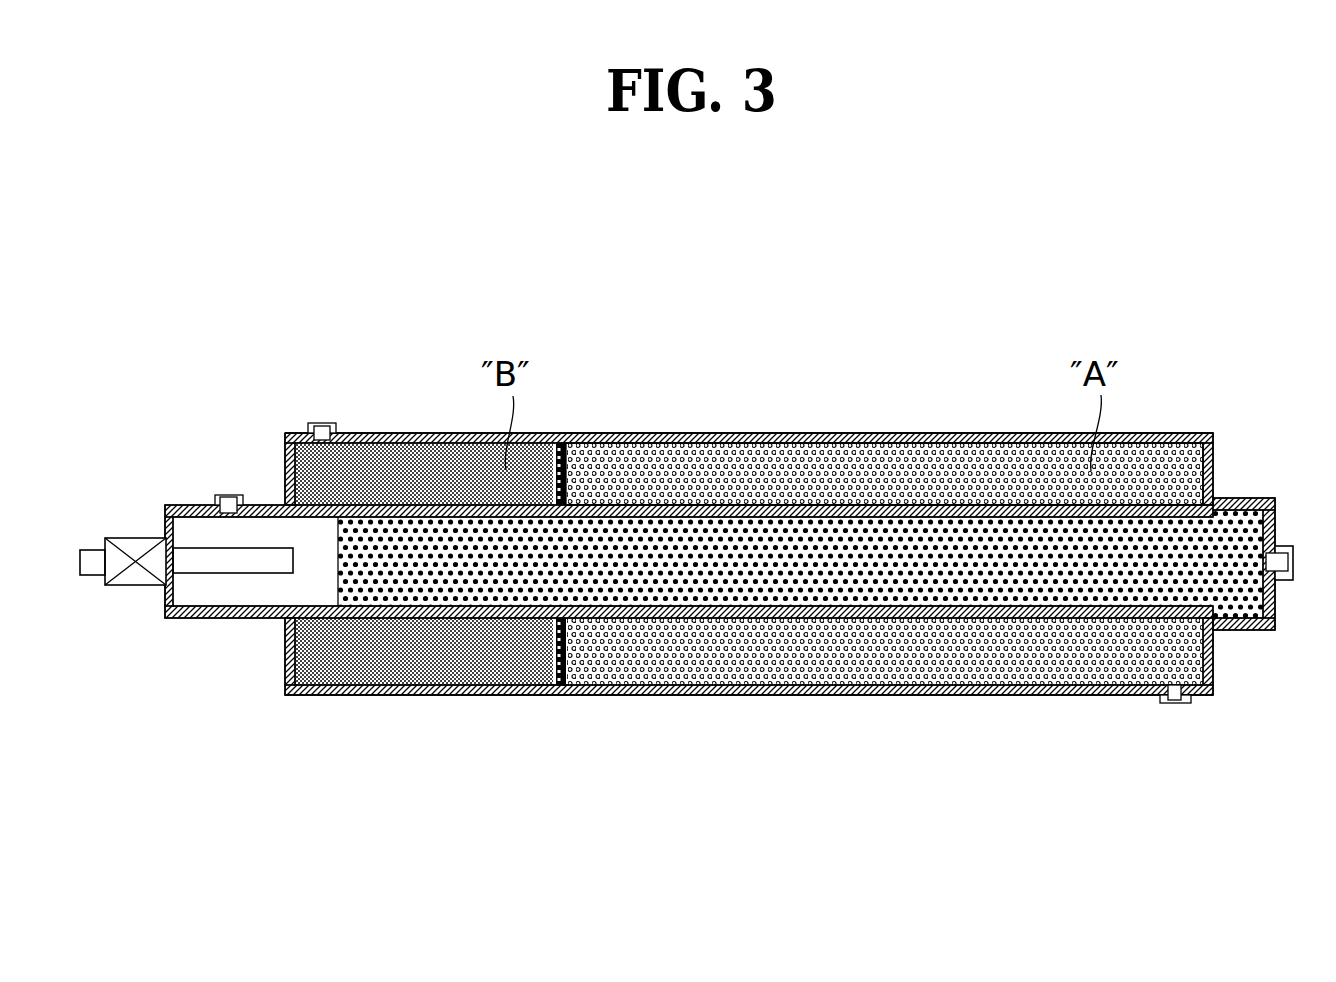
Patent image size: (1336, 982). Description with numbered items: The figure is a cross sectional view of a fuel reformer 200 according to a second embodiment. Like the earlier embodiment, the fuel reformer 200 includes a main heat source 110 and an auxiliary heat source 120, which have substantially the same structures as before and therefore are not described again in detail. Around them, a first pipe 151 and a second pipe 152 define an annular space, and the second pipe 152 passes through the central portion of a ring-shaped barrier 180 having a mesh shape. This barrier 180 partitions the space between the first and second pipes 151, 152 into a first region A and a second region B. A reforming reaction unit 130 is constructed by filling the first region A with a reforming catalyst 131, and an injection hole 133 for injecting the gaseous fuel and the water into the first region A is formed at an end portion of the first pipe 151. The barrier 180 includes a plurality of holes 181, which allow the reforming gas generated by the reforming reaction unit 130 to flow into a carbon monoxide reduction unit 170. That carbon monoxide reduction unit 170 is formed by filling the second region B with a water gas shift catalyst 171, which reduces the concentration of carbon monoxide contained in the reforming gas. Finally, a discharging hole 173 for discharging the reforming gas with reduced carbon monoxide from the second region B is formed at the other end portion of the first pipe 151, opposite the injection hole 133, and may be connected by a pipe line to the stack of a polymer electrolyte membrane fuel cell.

The fuel reformer 200 is at (753, 270).
The main heat source 110 is at (757, 602).
The auxiliary heat source 120 is at (152, 618).
The reforming reaction unit 130 is at (945, 412).
The reforming catalyst 131 is at (658, 452).
The injection hole 133 is at (1167, 695).
The first pipe 151 is at (738, 425).
The second pipe 152 is at (838, 495).
The carbon monoxide reduction unit 170 is at (382, 698).
The water gas shift catalyst 171 is at (407, 440).
The discharging hole 173 is at (312, 415).
The barrier 180 is at (577, 687).
The holes 181 is at (535, 687).